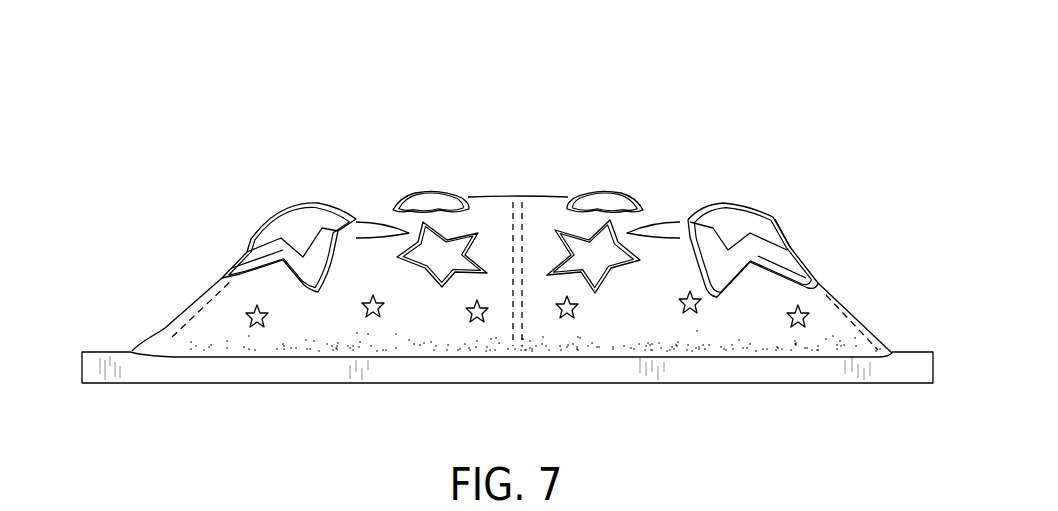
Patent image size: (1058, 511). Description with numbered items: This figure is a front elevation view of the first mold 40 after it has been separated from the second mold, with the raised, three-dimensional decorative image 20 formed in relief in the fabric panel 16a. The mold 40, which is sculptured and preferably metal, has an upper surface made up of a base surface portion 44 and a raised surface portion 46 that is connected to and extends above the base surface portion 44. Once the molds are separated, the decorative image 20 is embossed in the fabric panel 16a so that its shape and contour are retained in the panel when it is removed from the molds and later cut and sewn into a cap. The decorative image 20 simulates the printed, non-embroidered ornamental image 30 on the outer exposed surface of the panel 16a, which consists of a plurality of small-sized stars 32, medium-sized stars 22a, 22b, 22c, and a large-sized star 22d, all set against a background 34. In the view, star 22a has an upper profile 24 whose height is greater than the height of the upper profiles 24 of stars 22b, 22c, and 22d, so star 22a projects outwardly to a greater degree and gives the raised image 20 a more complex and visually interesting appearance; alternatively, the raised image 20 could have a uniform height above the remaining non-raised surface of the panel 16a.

The fabric panel 16a is at (333, 330).
The raised, three-dimensional decorative image 20 is at (337, 197).
The medium-sized star 22a is at (277, 223).
The medium-sized star 22b is at (453, 243).
The medium-sized star 22c is at (430, 195).
The large-sized star 22d is at (242, 263).
The upper profile 24 is at (775, 222).
The ornamental image 30 is at (585, 185).
The small-sized stars 32 is at (383, 303).
The background 34 is at (660, 330).
The first mold 40 is at (218, 373).
The base surface portion 44 is at (190, 313).
The raised surface portion 46 is at (420, 188).